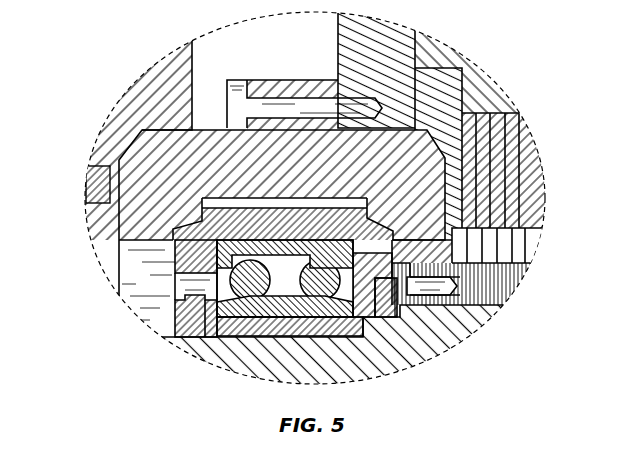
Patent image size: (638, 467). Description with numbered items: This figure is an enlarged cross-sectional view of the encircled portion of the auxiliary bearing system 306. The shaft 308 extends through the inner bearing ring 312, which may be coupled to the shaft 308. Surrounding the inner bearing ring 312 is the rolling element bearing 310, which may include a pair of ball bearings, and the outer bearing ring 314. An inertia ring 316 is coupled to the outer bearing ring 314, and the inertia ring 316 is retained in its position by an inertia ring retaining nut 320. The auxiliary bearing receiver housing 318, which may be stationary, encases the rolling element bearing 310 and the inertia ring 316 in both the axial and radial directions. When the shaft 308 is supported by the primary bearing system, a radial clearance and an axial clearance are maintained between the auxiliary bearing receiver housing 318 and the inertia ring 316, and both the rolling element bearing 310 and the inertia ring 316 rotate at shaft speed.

The auxiliary bearing system 306 is at (112, 60).
The shaft 308 is at (320, 352).
The rolling element bearing 310 is at (319, 281).
The inner bearing ring 312 is at (290, 305).
The outer bearing ring 314 is at (311, 246).
The inertia ring 316 is at (331, 222).
The auxiliary bearing receiver housing 318 is at (203, 132).
The inertia ring retaining nut 320 is at (189, 248).